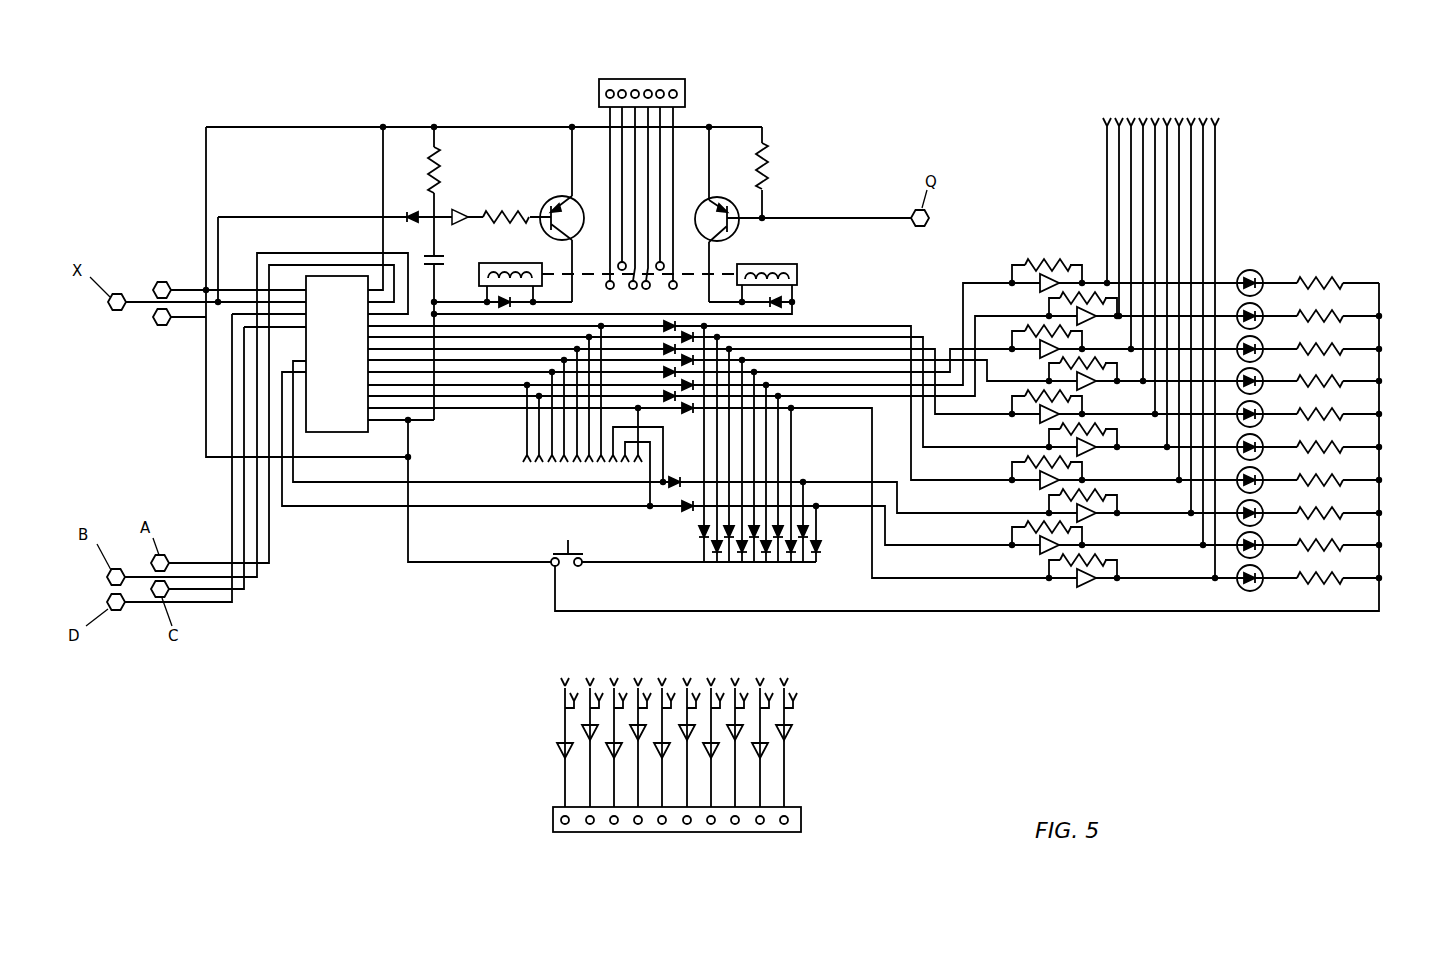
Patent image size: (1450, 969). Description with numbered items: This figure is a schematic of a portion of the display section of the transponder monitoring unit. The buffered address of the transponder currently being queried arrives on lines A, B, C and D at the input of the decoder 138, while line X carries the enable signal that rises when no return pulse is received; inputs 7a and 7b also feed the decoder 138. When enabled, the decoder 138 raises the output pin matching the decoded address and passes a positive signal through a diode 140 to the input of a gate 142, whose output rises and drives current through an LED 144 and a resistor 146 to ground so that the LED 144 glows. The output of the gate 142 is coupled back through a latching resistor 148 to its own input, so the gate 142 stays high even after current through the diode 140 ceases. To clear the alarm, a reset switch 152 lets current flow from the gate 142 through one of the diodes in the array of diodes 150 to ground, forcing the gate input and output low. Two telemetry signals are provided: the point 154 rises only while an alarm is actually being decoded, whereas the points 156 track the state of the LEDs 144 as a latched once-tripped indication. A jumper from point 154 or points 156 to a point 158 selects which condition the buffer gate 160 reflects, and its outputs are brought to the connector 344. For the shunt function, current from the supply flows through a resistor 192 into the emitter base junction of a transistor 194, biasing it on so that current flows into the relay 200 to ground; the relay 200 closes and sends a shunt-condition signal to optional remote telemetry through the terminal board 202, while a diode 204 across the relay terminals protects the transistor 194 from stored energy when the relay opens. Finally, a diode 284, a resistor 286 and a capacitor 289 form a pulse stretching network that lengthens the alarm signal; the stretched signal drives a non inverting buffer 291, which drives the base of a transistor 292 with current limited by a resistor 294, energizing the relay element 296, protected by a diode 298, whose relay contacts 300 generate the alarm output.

The input terminal 7a is at (162, 281).
The input terminal 7b is at (158, 326).
The decoder 138 is at (338, 277).
The diode 140 is at (657, 367).
The gate 142 is at (1033, 343).
The LED 144 is at (1267, 335).
The resistor 146 is at (1338, 338).
The resistor 148 is at (1038, 330).
The array of diodes 150 is at (758, 567).
The reset switch 152 is at (575, 568).
The point 154 is at (566, 482).
The points 156 is at (1151, 112).
The point 158 is at (672, 660).
The buffer gate 160 is at (748, 727).
The resistor 192 is at (775, 155).
The transistor 194 is at (745, 228).
The relay 200 is at (800, 268).
The terminal board 202 is at (688, 95).
The diode 204 is at (788, 300).
The diode 284 is at (408, 212).
The resistor 286 is at (423, 167).
The capacitor 289 is at (426, 256).
The non inverting buffer 291 is at (459, 208).
The transistor 292 is at (553, 202).
The resistor 294 is at (507, 210).
The relay element 296 is at (527, 262).
The diode 298 is at (505, 312).
The relay contacts 300 is at (642, 262).
The connector 344 is at (680, 833).